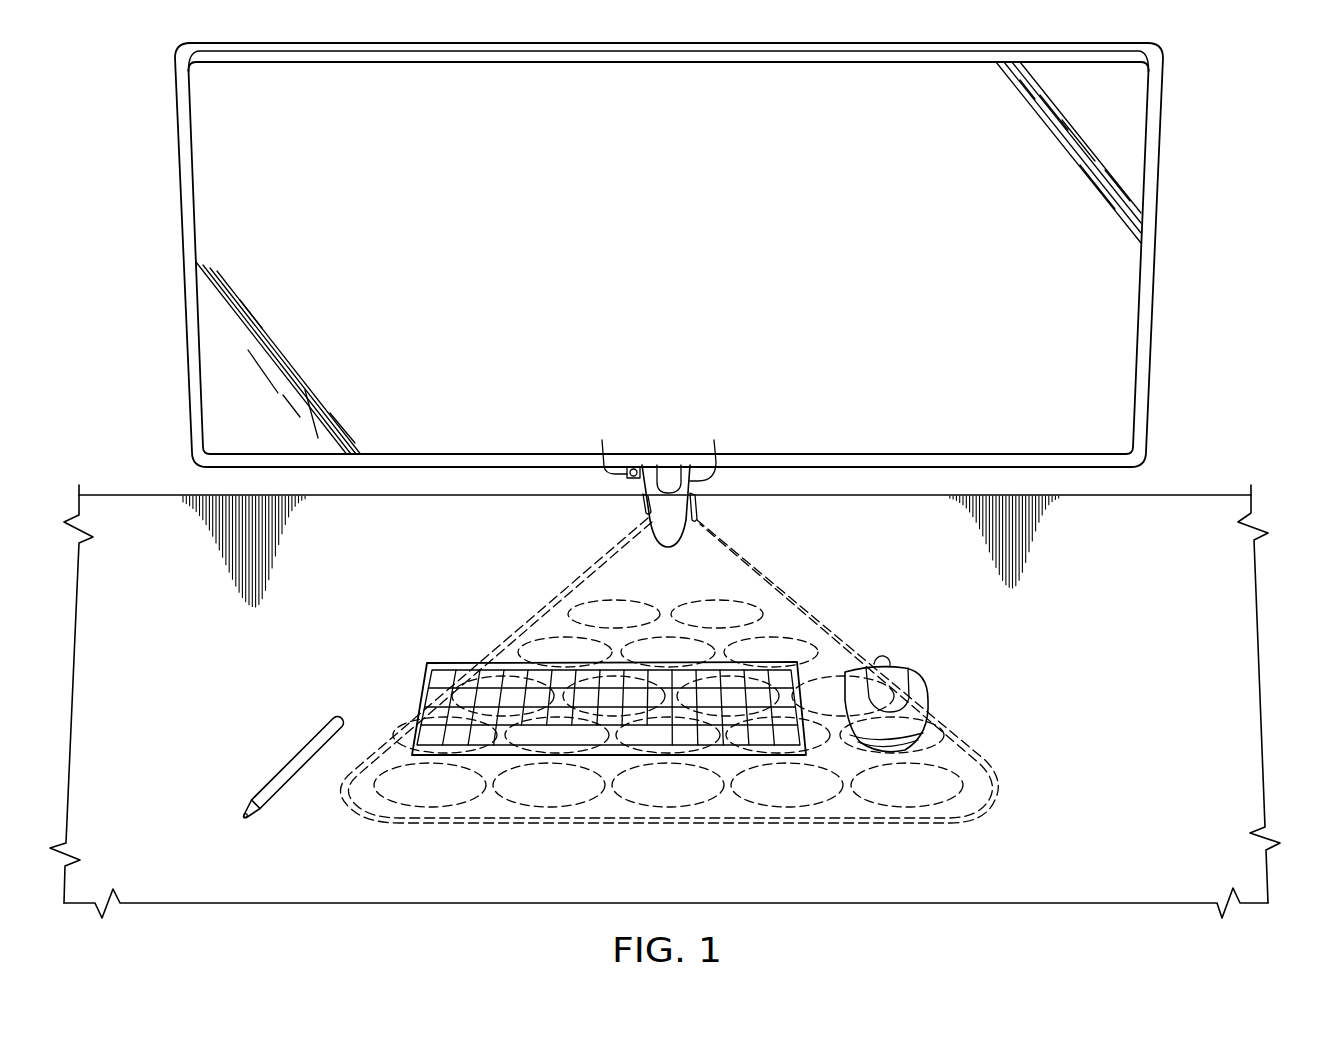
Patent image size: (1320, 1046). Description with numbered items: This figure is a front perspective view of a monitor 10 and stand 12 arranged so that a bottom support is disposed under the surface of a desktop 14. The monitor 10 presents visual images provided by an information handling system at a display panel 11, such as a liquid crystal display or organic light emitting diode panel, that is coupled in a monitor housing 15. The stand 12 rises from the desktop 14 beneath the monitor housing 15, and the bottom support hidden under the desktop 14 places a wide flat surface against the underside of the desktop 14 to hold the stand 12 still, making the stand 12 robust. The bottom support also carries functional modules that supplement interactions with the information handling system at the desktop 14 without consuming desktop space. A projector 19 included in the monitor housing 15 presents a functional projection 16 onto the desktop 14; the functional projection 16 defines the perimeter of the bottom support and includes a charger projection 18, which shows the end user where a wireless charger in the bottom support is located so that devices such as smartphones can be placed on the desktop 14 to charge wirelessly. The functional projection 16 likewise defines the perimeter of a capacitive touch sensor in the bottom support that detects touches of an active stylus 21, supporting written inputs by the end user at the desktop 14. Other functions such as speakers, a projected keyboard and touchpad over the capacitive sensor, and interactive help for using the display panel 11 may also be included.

The monitor 10 is at (1225, 187).
The display panel 11 is at (217, 139).
The stand 12 is at (698, 462).
The desktop 14 is at (1209, 475).
The monitor housing 15 is at (187, 302).
The functional projection 16 is at (838, 597).
The charger projection 18 is at (966, 738).
The projector 19 is at (625, 466).
The active stylus 21 is at (292, 760).